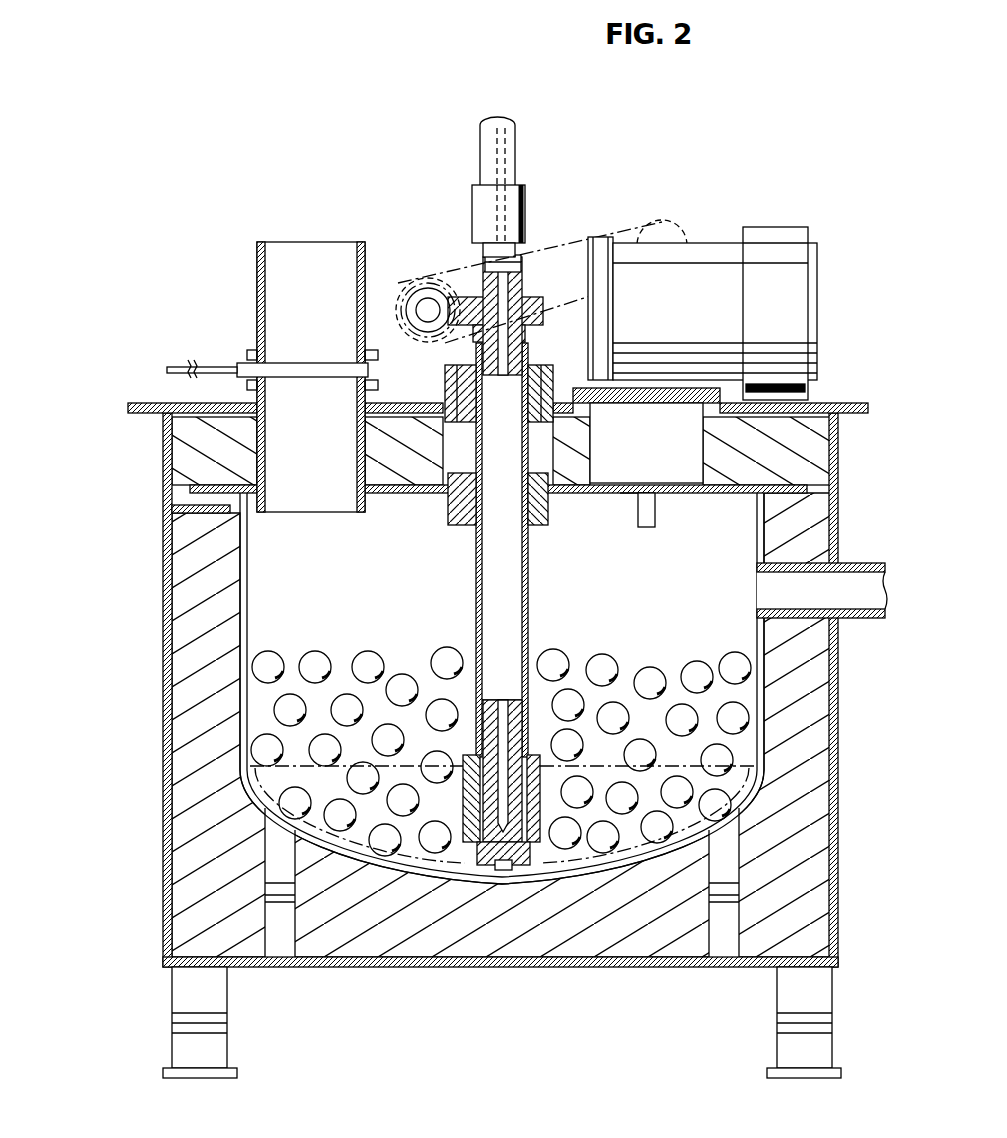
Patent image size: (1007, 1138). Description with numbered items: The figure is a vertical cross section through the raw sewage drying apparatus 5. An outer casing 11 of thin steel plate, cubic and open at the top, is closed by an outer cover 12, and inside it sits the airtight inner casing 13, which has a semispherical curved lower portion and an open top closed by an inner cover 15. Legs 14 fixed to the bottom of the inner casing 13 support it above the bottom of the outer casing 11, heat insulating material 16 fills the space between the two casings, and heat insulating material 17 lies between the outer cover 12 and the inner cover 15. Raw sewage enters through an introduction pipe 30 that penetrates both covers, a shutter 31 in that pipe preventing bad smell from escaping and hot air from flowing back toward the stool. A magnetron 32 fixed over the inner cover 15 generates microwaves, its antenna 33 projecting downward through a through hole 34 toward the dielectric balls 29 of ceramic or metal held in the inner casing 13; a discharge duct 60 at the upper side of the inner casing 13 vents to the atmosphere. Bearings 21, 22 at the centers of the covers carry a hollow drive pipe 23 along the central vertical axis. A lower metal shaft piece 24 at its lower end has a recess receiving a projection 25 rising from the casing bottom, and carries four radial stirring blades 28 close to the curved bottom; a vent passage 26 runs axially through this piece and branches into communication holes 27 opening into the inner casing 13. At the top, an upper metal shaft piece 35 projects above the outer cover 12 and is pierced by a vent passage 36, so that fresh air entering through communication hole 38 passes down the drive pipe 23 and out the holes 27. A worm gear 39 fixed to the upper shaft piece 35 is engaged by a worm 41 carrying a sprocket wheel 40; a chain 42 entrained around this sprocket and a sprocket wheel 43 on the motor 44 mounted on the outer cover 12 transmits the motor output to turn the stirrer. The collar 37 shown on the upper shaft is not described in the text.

The raw sewage drying apparatus 5 is at (138, 397).
The outer casing 11 is at (836, 731).
The outer cover 12 is at (824, 403).
The inner casing 13 is at (247, 577).
The legs 14 is at (266, 878).
The inner cover 15 is at (394, 493).
The heat insulating material 16 is at (826, 665).
The heat insulating material 17 is at (824, 452).
The bearing 21 is at (543, 526).
The bearing 22 is at (543, 366).
The drive pipe 23 is at (477, 552).
The lower metal shaft piece 24 is at (492, 700).
The projection 25 is at (503, 871).
The vent passage 26 is at (521, 700).
The communication holes 27 is at (471, 845).
The stirring blades 28 is at (257, 812).
The balls 29 is at (366, 651).
The introduction pipe 30 is at (352, 242).
The shutter 31 is at (308, 362).
The magnetron 32 is at (680, 483).
The antenna 33 is at (648, 528).
The through hole 34 is at (636, 494).
The upper metal shaft piece 35 is at (488, 266).
The vent passage 36 is at (502, 336).
The collar 37 is at (525, 205).
The communication hole 38 is at (515, 142).
The worm gear 39 is at (528, 297).
The sprocket wheel 40 is at (426, 342).
The worm 41 is at (408, 302).
The chain 42 is at (636, 235).
The sprocket wheel 43 is at (675, 222).
The motor 44 is at (775, 232).
The discharge duct 60 is at (871, 556).